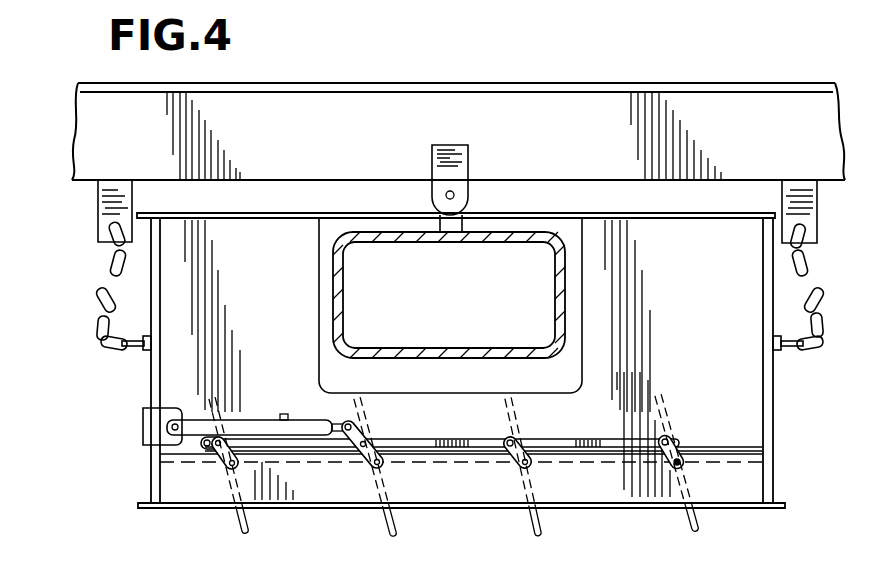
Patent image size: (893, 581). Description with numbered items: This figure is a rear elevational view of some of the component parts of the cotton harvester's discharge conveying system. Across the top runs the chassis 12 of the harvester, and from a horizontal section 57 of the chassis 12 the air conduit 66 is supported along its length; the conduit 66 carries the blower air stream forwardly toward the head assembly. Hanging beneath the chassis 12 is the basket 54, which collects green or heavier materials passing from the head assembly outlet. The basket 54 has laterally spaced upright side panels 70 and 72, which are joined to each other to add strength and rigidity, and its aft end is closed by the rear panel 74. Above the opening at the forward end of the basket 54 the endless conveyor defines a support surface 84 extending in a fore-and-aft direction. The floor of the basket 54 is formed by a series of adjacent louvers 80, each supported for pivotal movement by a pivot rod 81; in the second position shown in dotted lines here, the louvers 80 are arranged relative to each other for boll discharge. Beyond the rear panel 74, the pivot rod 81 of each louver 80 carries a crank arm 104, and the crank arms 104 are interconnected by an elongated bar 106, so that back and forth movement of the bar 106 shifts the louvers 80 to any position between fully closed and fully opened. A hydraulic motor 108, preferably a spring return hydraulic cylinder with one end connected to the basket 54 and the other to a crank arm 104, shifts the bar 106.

The chassis 12 is at (548, 84).
The horizontal section 57 is at (773, 118).
The basket 54 is at (141, 394).
The conduit 66 is at (560, 286).
The side panel 70 is at (148, 366).
The side panel 72 is at (774, 413).
The rear panel 74 is at (714, 334).
The louvers 80 is at (385, 525).
The pivot rod 81 is at (372, 436).
The support surface 84 is at (243, 442).
The crank arm 104 is at (666, 440).
The bar 106 is at (534, 441).
The hydraulic motor 108 is at (193, 432).